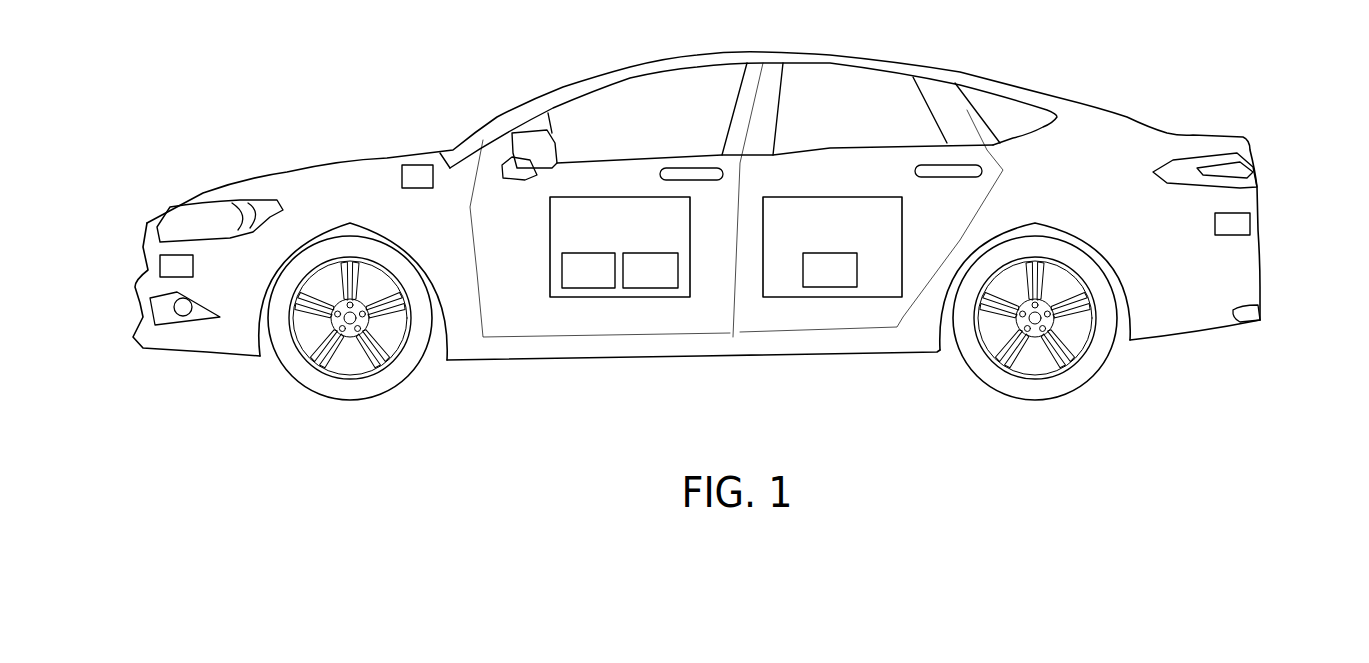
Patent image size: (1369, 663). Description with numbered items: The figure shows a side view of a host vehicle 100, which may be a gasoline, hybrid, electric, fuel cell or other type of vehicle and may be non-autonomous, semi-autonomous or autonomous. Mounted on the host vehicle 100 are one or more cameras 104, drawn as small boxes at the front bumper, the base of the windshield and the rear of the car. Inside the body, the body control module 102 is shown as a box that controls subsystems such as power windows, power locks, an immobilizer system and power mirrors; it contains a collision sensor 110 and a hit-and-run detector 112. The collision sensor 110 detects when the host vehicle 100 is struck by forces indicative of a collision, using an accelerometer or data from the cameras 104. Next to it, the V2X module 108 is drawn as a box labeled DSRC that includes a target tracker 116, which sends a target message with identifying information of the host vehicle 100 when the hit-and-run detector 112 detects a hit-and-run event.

The host vehicle 100 is at (1000, 80).
The body control module 102 is at (620, 197).
The cameras 104 is at (160, 268).
The V2X module 108 is at (830, 197).
The collision sensor 110 is at (588, 270).
The hit-and-run detector 112 is at (650, 270).
The target tracker 116 is at (830, 270).